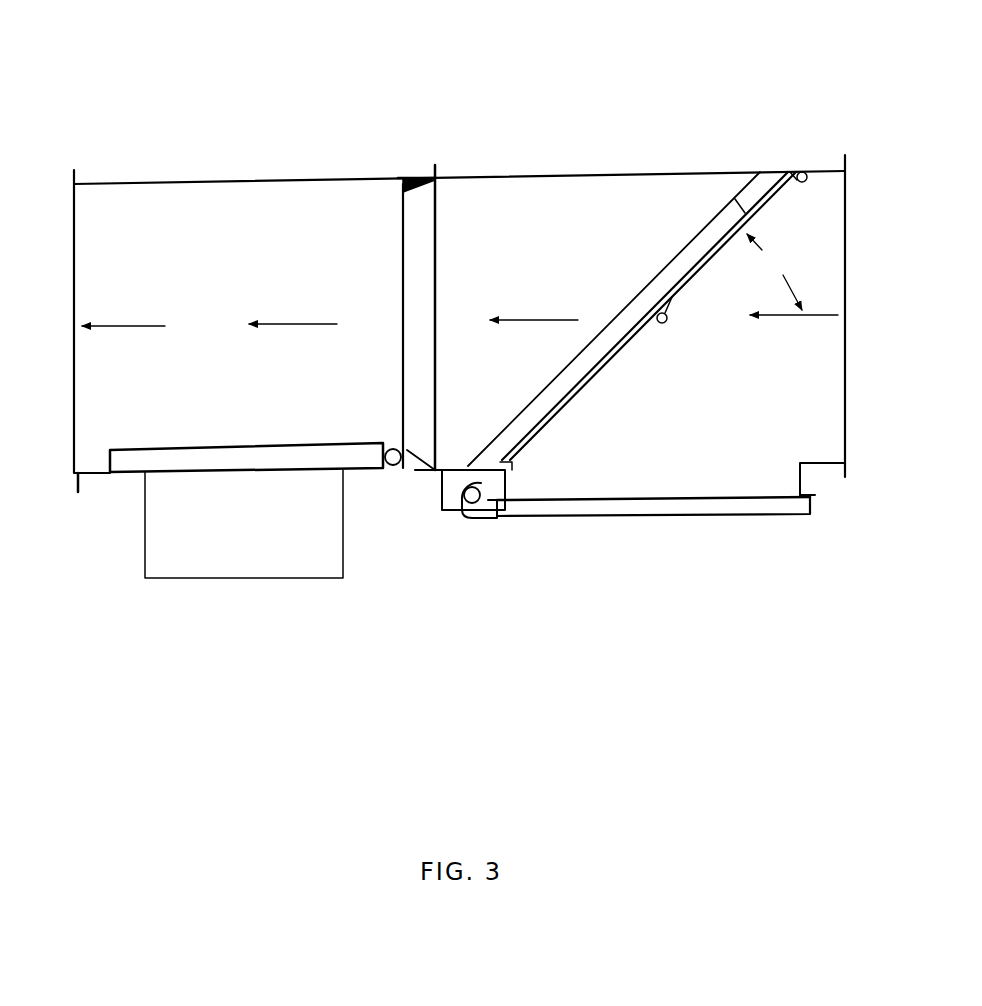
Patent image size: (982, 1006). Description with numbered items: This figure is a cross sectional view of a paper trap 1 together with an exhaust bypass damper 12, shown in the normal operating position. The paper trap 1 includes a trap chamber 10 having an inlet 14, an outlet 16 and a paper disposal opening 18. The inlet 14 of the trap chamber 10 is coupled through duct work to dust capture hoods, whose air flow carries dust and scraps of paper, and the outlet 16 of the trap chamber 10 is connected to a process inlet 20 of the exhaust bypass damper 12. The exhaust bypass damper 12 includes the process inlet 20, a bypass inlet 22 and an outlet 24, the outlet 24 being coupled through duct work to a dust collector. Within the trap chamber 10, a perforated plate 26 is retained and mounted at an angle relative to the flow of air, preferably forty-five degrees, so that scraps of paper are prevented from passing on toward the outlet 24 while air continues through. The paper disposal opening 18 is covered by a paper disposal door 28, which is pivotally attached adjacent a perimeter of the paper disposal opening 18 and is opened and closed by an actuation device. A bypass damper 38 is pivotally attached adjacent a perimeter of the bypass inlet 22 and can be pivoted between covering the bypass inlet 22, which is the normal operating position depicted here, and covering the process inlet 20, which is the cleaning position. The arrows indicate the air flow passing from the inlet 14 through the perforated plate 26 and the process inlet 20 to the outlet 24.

The paper trap 1 is at (502, 46).
The trap chamber 10 is at (594, 170).
The exhaust bypass damper 12 is at (272, 174).
The inlet 14 is at (820, 262).
The outlet 16 is at (450, 193).
The paper disposal opening 18 is at (630, 482).
The process inlet 20 is at (422, 221).
The bypass inlet 22 is at (280, 487).
The outlet 24 is at (82, 213).
The perforated plate 26 is at (723, 168).
The paper disposal door 28 is at (780, 505).
The bypass damper 38 is at (177, 462).